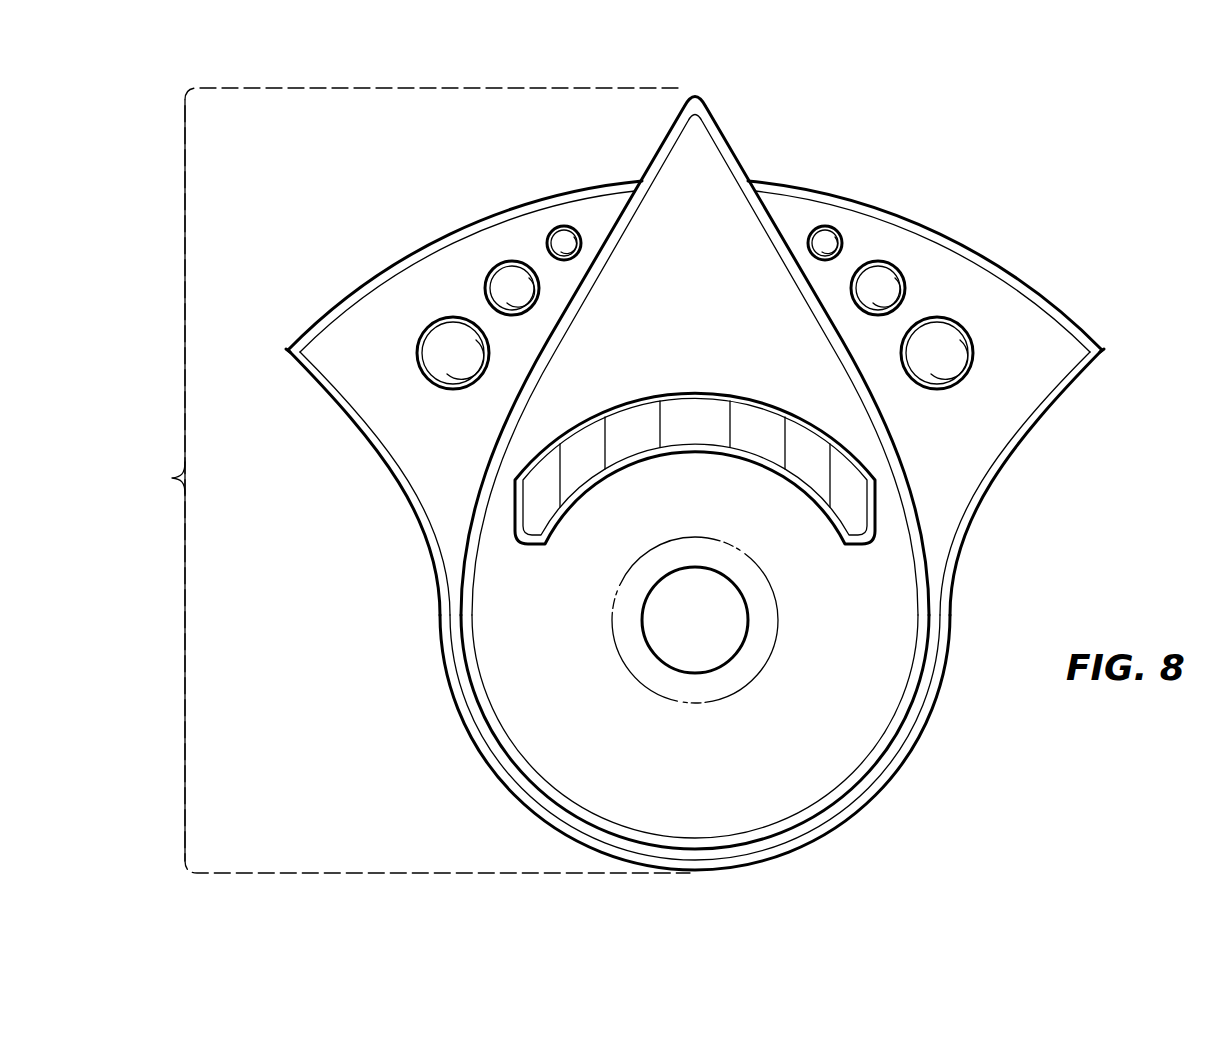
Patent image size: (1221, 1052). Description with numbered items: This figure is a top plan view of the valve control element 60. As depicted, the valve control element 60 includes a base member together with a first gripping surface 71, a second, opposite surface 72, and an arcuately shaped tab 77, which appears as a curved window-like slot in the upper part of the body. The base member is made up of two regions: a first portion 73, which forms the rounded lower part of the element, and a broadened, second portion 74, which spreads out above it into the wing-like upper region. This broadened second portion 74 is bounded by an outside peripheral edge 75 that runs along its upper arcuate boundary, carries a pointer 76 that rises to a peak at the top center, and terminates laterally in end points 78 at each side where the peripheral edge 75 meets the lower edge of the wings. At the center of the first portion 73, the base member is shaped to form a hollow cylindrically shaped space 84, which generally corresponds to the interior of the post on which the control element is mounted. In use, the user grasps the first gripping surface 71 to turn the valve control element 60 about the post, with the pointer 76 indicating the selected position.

The valve control element 60 is at (172, 478).
The first gripping surface 71 is at (1026, 366).
The second, opposite surface 72 is at (371, 450).
The first portion 73 is at (815, 753).
The broadened, second portion 74 is at (953, 287).
The outside peripheral edge 75 is at (908, 217).
The pointer 76 is at (697, 86).
The arcuately shaped tab 77 is at (627, 463).
The end points 78 is at (285, 350).
The hollow cylindrically shaped space 84 is at (672, 632).